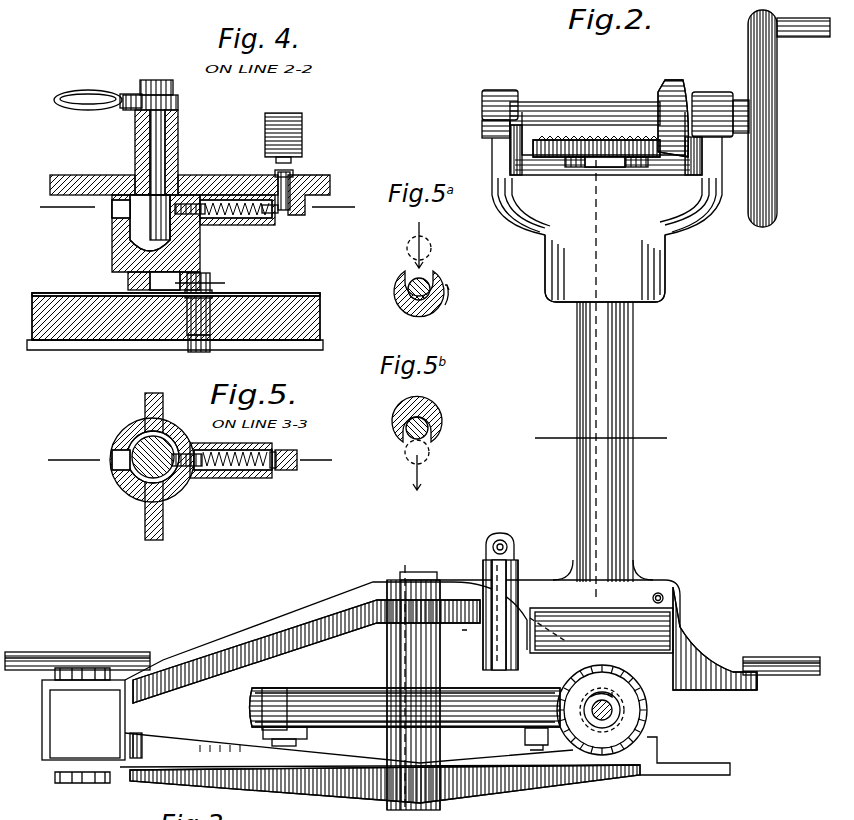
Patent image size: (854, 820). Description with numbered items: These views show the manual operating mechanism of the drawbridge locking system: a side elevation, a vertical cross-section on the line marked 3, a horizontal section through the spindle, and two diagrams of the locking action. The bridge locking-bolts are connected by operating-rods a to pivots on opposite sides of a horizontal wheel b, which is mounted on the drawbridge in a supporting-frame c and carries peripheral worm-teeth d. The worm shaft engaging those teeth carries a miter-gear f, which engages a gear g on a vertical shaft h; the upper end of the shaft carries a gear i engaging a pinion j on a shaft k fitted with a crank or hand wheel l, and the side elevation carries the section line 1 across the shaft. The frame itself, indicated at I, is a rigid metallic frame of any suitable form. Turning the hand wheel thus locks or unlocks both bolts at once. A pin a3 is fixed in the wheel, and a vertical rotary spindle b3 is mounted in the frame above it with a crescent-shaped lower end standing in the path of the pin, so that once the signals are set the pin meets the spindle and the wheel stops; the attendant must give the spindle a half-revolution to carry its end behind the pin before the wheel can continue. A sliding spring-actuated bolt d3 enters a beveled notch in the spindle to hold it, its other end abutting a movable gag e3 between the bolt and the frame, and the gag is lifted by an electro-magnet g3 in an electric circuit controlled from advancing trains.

In FIG. 3, the operating-rods a is at (150, 664).
In FIG. 4, the horizontal wheel b is at (175, 321).
In FIG. 3, the horizontal wheel b is at (355, 690).
In FIG. 4, the supporting-frame c is at (197, 184).
In FIG. 5, the supporting-frame c is at (160, 466).
In FIG. 3, the supporting-frame c is at (399, 681).
In FIG. 5, the peripheral worm-teeth d is at (228, 480).
In FIG. 3, the peripheral worm-teeth d is at (250, 712).
In FIG. 3, the miter-gear f is at (648, 725).
In FIG. 3, the gear g is at (628, 660).
In FIG. 2, the vertical shaft h is at (605, 442).
In FIG. 2, the gear i is at (596, 145).
In FIG. 2, the pinion j is at (672, 82).
In FIG. 2, the shaft k is at (585, 103).
In FIG. 2, the hand wheel l is at (781, 118).
In FIG. 2, the head frame I is at (607, 187).
In FIG. 2, the section line 1 1 is at (603, 438).
In FIG. 4, the section line 3 3 is at (199, 212).
In FIG. 3, the section line 3 3 is at (509, 630).
In FIG. 4, the pin a3 is at (210, 283).
In FIG. 5A, the pin a3 is at (427, 283).
In FIG. 5B, the pin a3 is at (409, 437).
In FIG. 4, the vertical rotary spindle b3 is at (156, 242).
In FIG. 5, the vertical rotary spindle b3 is at (170, 432).
In FIG. 5A, the vertical rotary spindle b3 is at (415, 302).
In FIG. 5B, the vertical rotary spindle b3 is at (427, 417).
In FIG. 3, the vertical rotary spindle b3 is at (500, 530).
In FIG. 4, the sliding spring-actuated bolt d3 is at (245, 222).
In FIG. 4, the movable gag e3 is at (288, 212).
In FIG. 5, the movable gag e3 is at (284, 450).
In FIG. 4, the electro-magnet g3 is at (293, 138).